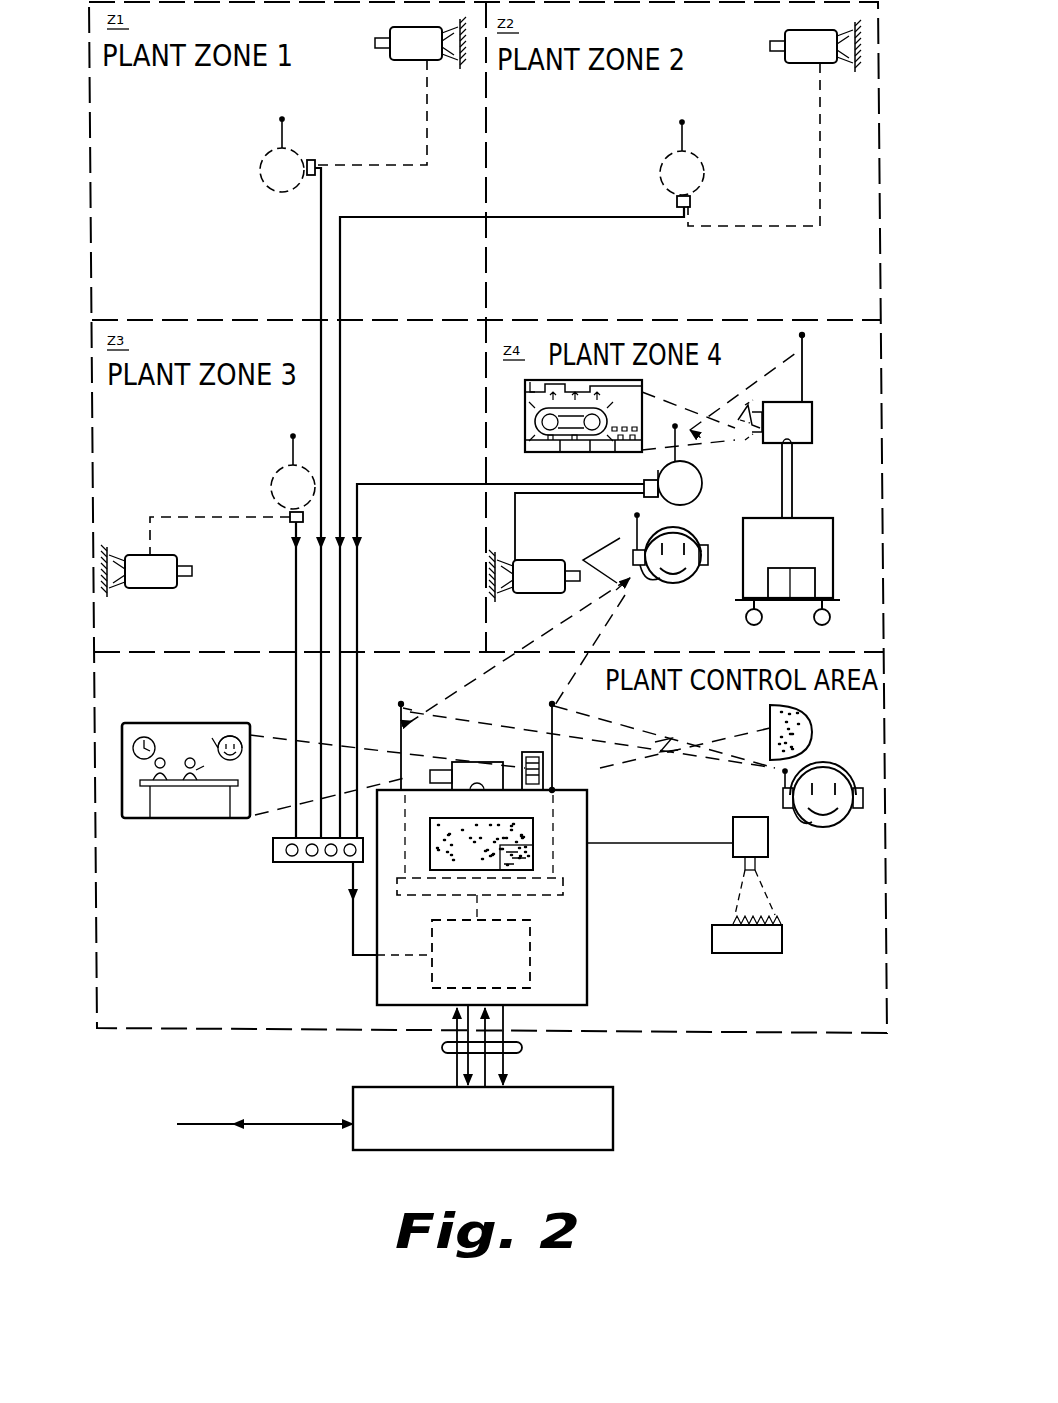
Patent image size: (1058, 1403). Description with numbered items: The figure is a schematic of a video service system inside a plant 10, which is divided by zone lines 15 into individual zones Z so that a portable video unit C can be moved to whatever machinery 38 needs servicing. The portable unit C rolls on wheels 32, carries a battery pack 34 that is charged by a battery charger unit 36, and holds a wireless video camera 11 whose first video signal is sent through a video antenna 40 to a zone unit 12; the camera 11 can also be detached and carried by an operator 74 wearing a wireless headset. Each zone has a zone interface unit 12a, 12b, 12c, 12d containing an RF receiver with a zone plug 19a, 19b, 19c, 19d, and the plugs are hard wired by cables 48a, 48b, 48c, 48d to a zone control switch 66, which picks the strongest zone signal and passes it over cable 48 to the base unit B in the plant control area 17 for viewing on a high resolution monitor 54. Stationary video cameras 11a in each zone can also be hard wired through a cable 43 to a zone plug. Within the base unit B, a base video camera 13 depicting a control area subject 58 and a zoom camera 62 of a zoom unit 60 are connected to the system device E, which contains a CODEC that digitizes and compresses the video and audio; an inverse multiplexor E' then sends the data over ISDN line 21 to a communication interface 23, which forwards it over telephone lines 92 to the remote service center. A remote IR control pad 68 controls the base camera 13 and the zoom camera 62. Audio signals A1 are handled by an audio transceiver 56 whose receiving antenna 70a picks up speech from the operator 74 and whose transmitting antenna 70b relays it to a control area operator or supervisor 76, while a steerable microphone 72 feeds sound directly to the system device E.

The plant 10 is at (152, 1032).
The video camera 11 is at (815, 422).
The stationary video camera 11a is at (438, 62).
The zone unit 12 is at (656, 475).
The zone interface unit 12a is at (282, 154).
The zone interface unit 12b is at (682, 157).
The zone interface unit 12c is at (293, 471).
The zone interface unit 12d is at (680, 464).
The base video camera 13 is at (492, 782).
The zone line 15 is at (263, 298).
The plant control area 17 is at (830, 1016).
The zone plug 19a is at (320, 163).
The zone plug 19b is at (692, 202).
The zone plug 19c is at (290, 521).
The zone plug 19d is at (650, 497).
The ISDN line 21 is at (526, 1048).
The communication interface 23 is at (412, 1083).
The wheels 32 is at (745, 620).
The battery pack 34 is at (815, 585).
The battery charger unit 36 is at (786, 566).
The operating machinery 38 is at (608, 380).
The video antenna 40 is at (806, 377).
The cable 43 is at (425, 122).
The cable 48 is at (352, 915).
The cable 48a is at (318, 292).
The cable 48b is at (548, 218).
The cable 48c is at (293, 615).
The cable 48d is at (452, 485).
The monitor 54 is at (430, 852).
The audio transceiver component 56 is at (563, 881).
The control area subject 58 is at (118, 772).
The zoom unit 60 is at (785, 898).
The zoom camera 62 is at (770, 845).
The zone control switch 66 is at (272, 848).
The remote IR control pad 68 is at (810, 728).
The receiving antenna 70a is at (452, 772).
The transmitting antenna 70b is at (560, 770).
The microphone 72 is at (657, 752).
The operator 74 is at (703, 525).
The control area operator or supervisor 76 is at (855, 772).
The telephone lines 92 is at (265, 1128).
The audio signals A1 is at (468, 686).
The base unit B is at (352, 978).
The portable video unit C is at (822, 483).
The system device E is at (534, 954).
The inverse multiplexor device E' is at (602, 1032).
The zones Z is at (882, 155).